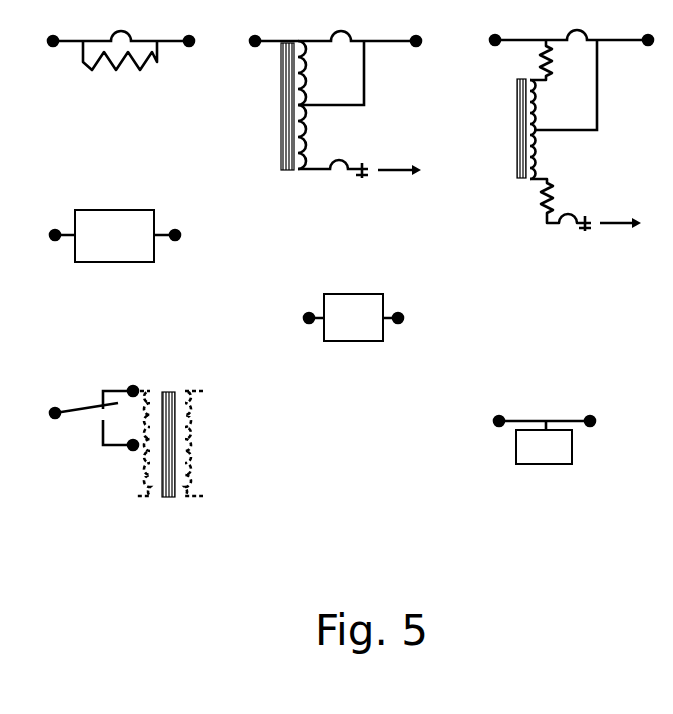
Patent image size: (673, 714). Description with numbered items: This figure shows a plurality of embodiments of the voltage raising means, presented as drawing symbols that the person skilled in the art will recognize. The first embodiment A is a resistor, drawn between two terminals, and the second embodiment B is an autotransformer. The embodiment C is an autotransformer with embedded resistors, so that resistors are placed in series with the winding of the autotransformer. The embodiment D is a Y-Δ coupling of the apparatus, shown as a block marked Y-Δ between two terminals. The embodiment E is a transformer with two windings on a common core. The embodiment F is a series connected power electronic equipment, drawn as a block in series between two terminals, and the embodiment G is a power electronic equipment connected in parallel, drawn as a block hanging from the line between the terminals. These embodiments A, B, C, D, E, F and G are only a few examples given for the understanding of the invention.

The resistor A is at (125, 85).
The autotransformer B is at (345, 104).
The autotransformer with embedded resistors C is at (579, 130).
The Y-Δ coupling of the apparatus D is at (127, 273).
The transformer E is at (159, 441).
The series connected power electronic equipment F is at (376, 347).
The power electronic equipment connected in parallel G is at (571, 464).